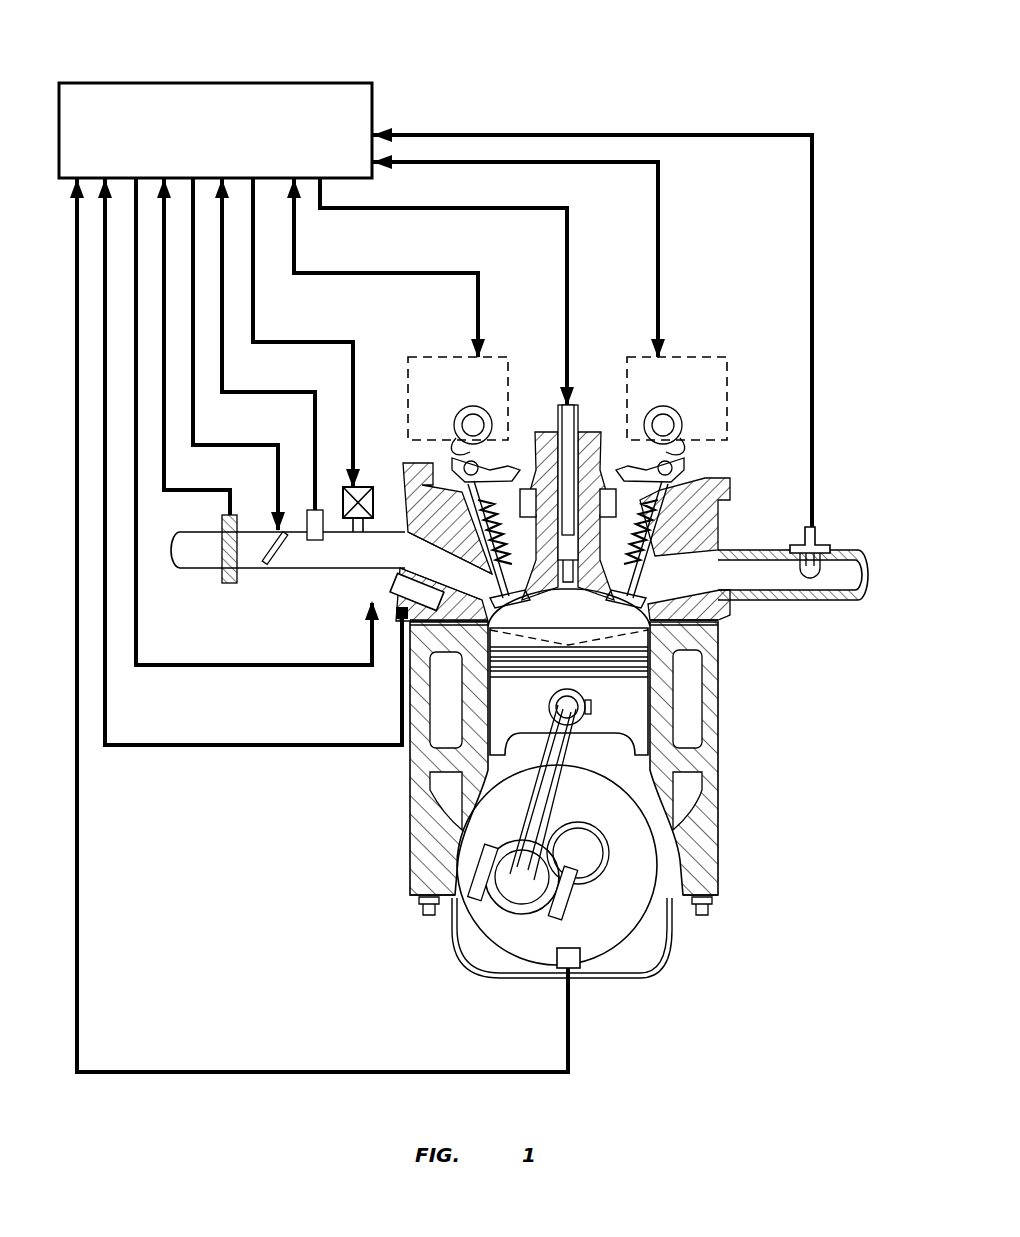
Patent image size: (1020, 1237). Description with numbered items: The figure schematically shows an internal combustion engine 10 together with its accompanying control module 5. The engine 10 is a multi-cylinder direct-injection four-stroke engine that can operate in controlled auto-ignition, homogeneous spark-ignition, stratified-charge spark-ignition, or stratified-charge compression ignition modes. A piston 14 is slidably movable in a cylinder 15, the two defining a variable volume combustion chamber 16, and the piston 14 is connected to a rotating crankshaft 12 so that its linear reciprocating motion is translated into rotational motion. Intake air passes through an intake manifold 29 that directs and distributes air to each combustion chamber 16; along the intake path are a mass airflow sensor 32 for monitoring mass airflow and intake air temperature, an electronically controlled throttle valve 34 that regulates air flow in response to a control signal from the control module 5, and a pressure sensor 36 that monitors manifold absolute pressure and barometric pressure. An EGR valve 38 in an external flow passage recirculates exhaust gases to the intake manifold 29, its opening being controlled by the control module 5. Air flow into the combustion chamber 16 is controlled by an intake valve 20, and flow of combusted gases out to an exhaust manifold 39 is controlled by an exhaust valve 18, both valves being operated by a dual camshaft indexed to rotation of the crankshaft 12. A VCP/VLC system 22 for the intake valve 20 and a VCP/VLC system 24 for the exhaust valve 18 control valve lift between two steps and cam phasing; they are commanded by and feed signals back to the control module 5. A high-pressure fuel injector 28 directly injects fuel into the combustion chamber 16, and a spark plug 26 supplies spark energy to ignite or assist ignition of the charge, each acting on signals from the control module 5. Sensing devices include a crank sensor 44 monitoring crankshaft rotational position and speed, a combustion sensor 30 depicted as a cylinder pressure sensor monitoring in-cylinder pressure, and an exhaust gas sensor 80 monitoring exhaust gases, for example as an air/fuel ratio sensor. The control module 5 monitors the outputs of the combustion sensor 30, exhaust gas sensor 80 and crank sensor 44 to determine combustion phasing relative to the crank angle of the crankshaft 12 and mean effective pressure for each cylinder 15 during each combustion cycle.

The control module 5 is at (322, 76).
The internal combustion engine 10 is at (724, 758).
The crankshaft 12 is at (626, 912).
The piston 14 is at (626, 719).
The cylinder 15 is at (658, 630).
The combustion chamber 16 is at (550, 612).
The exhaust valve 18 is at (617, 586).
The intake valve 20 is at (495, 578).
The VCP/VLC system for intake valves 22 is at (503, 356).
The VCP/VLC system for exhaust valves 24 is at (712, 422).
The spark plug 26 is at (583, 398).
The fuel injector 28 is at (368, 600).
The intake manifold 29 is at (388, 536).
The combustion sensor 30 is at (400, 640).
The mass airflow sensor 32 is at (228, 585).
The throttle valve 34 is at (274, 568).
The pressure sensor 36 is at (317, 542).
The EGR valve 38 is at (352, 520).
The exhaust manifold 39 is at (722, 570).
The crankshaft rotational speed sensor 44 is at (562, 964).
The exhaust gas sensor 80 is at (817, 540).